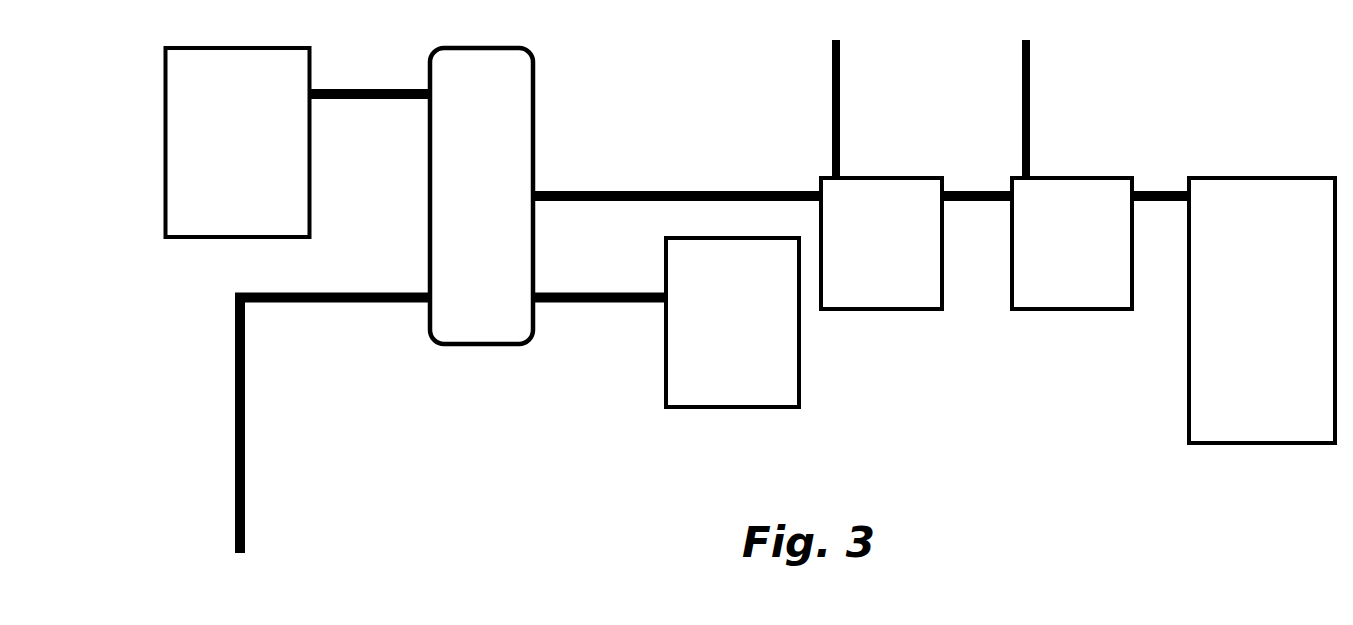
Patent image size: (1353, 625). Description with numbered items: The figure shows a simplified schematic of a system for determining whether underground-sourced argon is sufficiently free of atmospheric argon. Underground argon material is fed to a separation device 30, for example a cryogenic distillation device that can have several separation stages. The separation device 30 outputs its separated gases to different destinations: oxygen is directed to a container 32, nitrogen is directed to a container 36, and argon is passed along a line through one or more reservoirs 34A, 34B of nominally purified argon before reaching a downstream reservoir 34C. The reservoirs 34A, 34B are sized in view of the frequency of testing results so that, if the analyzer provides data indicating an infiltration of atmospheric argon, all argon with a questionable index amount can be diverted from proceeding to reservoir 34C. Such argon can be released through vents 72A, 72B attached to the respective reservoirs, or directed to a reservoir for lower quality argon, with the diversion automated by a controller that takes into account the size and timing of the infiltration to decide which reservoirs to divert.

The separation device 30 is at (537, 117).
The container 32 is at (665, 353).
The reservoir 34A is at (857, 310).
The reservoir 34B is at (1037, 310).
The reservoir 34C is at (1188, 394).
The container 36 is at (312, 187).
The vent 72A is at (840, 118).
The vent 72B is at (1031, 115).